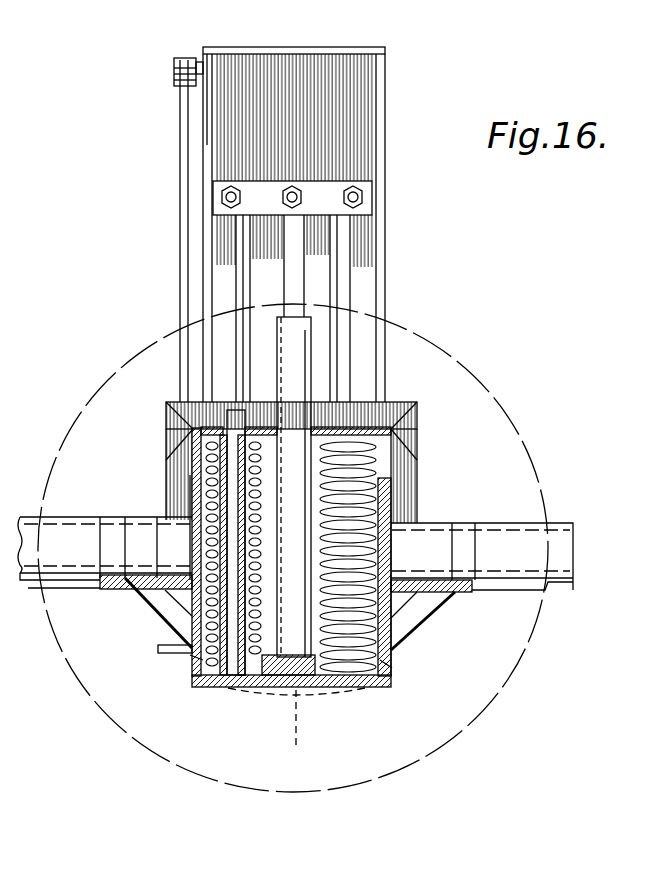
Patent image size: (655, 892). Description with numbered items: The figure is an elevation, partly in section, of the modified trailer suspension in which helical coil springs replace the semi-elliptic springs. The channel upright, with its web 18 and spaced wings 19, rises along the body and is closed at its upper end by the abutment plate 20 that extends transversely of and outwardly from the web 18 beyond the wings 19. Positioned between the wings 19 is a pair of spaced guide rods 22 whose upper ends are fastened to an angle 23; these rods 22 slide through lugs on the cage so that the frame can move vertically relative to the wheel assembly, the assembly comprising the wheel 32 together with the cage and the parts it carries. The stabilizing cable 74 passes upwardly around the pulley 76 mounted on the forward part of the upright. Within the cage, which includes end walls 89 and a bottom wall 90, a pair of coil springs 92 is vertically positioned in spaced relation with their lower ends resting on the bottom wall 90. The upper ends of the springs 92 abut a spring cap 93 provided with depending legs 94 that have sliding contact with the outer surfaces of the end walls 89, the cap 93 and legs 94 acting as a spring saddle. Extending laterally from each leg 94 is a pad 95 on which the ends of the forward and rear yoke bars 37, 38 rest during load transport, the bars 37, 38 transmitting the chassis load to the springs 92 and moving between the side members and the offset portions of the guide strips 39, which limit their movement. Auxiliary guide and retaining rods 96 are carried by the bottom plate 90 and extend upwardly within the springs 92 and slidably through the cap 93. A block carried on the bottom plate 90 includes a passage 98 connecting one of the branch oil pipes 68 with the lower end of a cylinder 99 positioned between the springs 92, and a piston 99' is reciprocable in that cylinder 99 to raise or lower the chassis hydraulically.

The abutment plate 20 is at (320, 50).
The pulley 76 is at (174, 90).
The cable 74 is at (180, 177).
The angle 23 is at (262, 182).
The wings 19 is at (378, 203).
The guide rods 22 is at (348, 254).
The piston 99' is at (358, 266).
The cylinder 99 is at (355, 484).
The web 18 is at (263, 393).
The spring cap 93 is at (386, 408).
The depending legs 94 is at (190, 436).
The auxiliary guide and retaining rods 96 is at (395, 517).
The forward yoke bar 37 is at (97, 550).
The rear yoke bar 38 is at (468, 550).
The guide strips 39 is at (90, 586).
The pad 95 is at (150, 594).
The coil springs 92 is at (395, 610).
The branch pipes 68 is at (158, 651).
The end walls 89 is at (190, 662).
The bottom wall 90 is at (335, 690).
The passage 98 is at (296, 732).
The wheel 32 is at (488, 698).